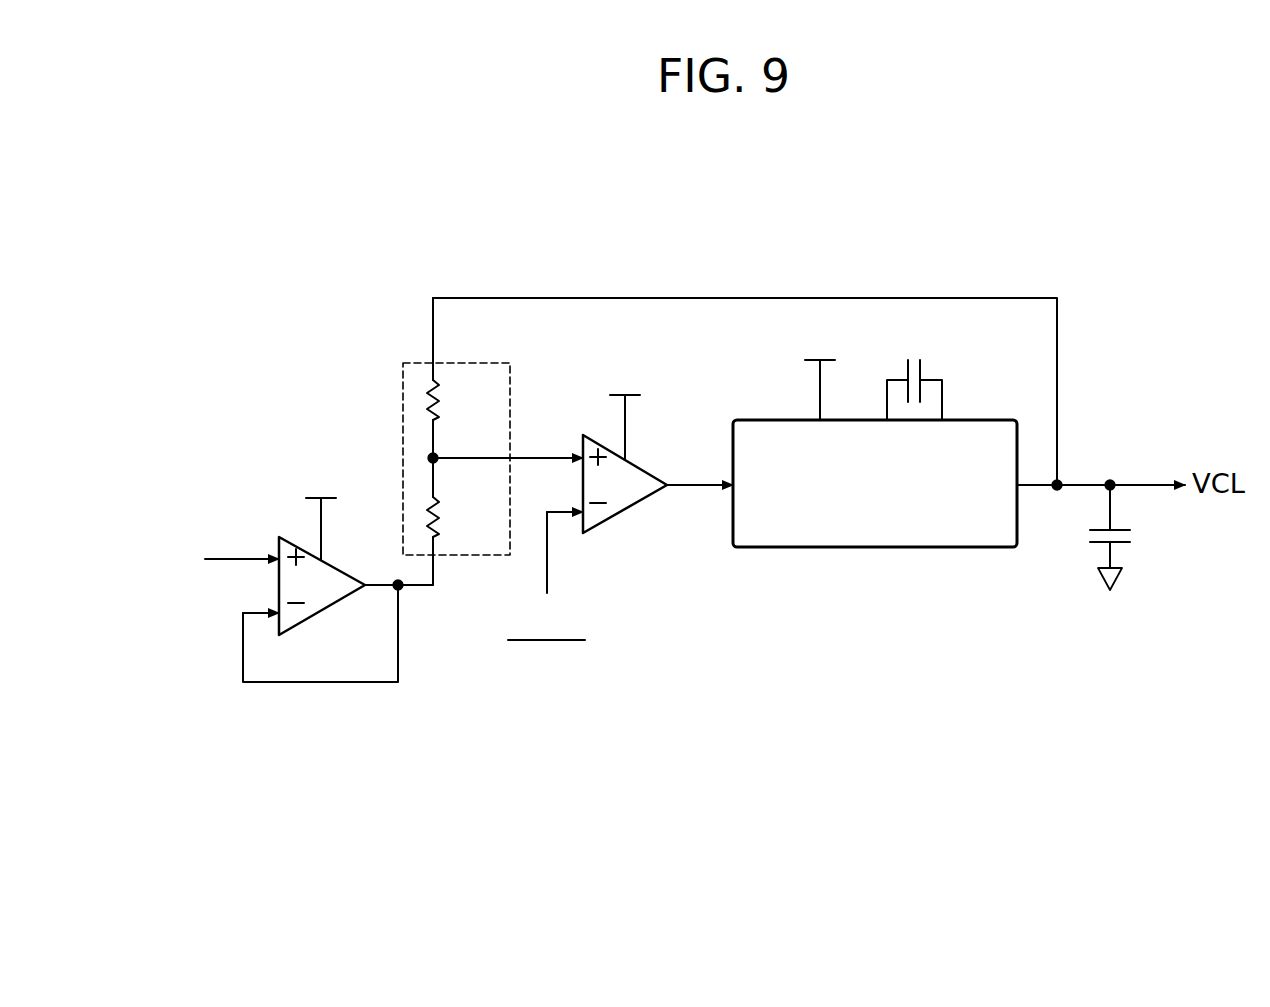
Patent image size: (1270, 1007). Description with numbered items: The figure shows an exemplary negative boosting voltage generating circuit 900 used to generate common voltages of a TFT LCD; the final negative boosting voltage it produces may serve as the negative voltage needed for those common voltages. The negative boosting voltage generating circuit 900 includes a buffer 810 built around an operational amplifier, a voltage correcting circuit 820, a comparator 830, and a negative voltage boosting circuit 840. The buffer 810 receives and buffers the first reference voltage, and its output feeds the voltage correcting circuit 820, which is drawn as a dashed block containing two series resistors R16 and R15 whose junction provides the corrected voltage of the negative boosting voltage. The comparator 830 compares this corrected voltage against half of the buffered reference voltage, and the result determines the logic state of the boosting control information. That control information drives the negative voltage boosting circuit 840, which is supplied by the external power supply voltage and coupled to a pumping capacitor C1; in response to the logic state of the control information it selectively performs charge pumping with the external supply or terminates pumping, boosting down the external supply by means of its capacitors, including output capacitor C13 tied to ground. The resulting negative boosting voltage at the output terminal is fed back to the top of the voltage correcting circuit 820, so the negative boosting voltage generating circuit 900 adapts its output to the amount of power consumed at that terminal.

The negative boosting voltage generating circuit 900 is at (1150, 283).
The buffer 810 is at (322, 612).
The voltage correcting circuit 820 is at (493, 441).
The comparator 830 is at (625, 512).
The negative voltage boosting circuit 840 is at (875, 472).
The resistor R16 is at (462, 400).
The resistor R15 is at (462, 517).
The boosting capacitor C1 is at (914, 371).
The capacitor C13 is at (1137, 537).